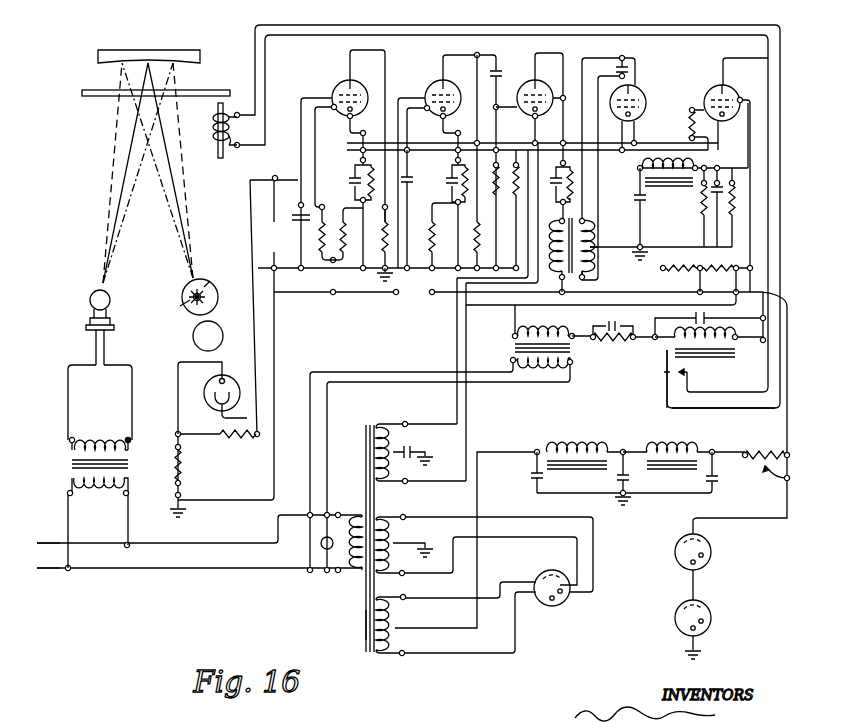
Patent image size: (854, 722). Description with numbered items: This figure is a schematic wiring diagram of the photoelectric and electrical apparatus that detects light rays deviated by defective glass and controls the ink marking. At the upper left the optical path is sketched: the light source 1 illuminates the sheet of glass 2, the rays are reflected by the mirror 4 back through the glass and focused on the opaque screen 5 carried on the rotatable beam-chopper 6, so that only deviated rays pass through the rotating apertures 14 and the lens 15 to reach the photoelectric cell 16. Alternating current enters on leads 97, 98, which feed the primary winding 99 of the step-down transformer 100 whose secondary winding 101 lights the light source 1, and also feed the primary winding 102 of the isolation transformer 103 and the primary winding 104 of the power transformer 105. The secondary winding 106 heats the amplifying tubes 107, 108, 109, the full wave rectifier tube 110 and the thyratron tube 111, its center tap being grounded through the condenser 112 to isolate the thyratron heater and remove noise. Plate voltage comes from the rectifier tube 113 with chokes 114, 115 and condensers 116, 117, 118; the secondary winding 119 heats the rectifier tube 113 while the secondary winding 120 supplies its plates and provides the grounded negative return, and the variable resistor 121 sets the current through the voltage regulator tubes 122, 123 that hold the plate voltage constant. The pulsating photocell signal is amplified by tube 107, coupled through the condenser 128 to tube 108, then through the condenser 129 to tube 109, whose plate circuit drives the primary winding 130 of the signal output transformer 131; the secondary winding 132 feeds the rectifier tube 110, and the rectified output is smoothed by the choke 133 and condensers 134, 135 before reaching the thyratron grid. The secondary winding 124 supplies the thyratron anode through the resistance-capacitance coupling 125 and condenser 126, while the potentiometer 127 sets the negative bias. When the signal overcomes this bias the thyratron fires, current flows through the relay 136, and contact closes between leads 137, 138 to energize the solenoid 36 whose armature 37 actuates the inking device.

The light source 1 is at (110, 298).
The sheet of glass 2 is at (207, 91).
The mirror 4 is at (172, 58).
The opaque screen 5 is at (215, 290).
The beam-chopper 6 is at (210, 281).
The rotating apertures 14 is at (190, 300).
The lens 15 is at (193, 337).
The photoelectric cell 16 is at (212, 401).
The solenoid 36 is at (229, 144).
The armature 37 is at (223, 147).
The lead 97 is at (43, 542).
The lead 98 is at (48, 571).
The primary winding 99 is at (97, 523).
The step-down transformer 100 is at (70, 463).
The secondary winding 101 is at (97, 438).
The primary winding 102 is at (352, 562).
The isolation transformer 103 is at (362, 619).
The primary winding 104 is at (575, 368).
The power transformer 105 is at (512, 347).
The secondary winding 106 is at (379, 428).
The amplifying tube 107 is at (340, 82).
The amplifying tube 108 is at (436, 84).
The amplifying tube 109 is at (528, 89).
The full wave rectifier tube 110 is at (646, 93).
The thyratron tube 111 is at (712, 87).
The condenser 112 is at (416, 450).
The rectifier tube 113 is at (562, 607).
The choke 114 is at (575, 441).
The choke 115 is at (668, 444).
The condenser 116 is at (532, 480).
The condenser 117 is at (617, 478).
The condenser 118 is at (720, 479).
The secondary winding 119 is at (390, 637).
The secondary winding 120 is at (396, 536).
The variable resistor 121 is at (770, 476).
The voltage regulator tube 122 is at (712, 549).
The voltage regulator tube 123 is at (712, 623).
The secondary winding 124 is at (565, 332).
The resistance-capacitance coupling 125 is at (622, 350).
The condenser 126 is at (705, 320).
The potentiometer 127 is at (736, 216).
The condenser 128 is at (393, 222).
The condenser 129 is at (501, 71).
The primary winding 130 is at (556, 232).
The signal output transformer 131 is at (582, 222).
The secondary winding 132 is at (600, 237).
The choke 133 is at (667, 183).
The condenser 134 is at (644, 213).
The condenser 135 is at (697, 220).
The relay 136 is at (733, 343).
The lead 137 is at (705, 390).
The lead 138 is at (708, 411).